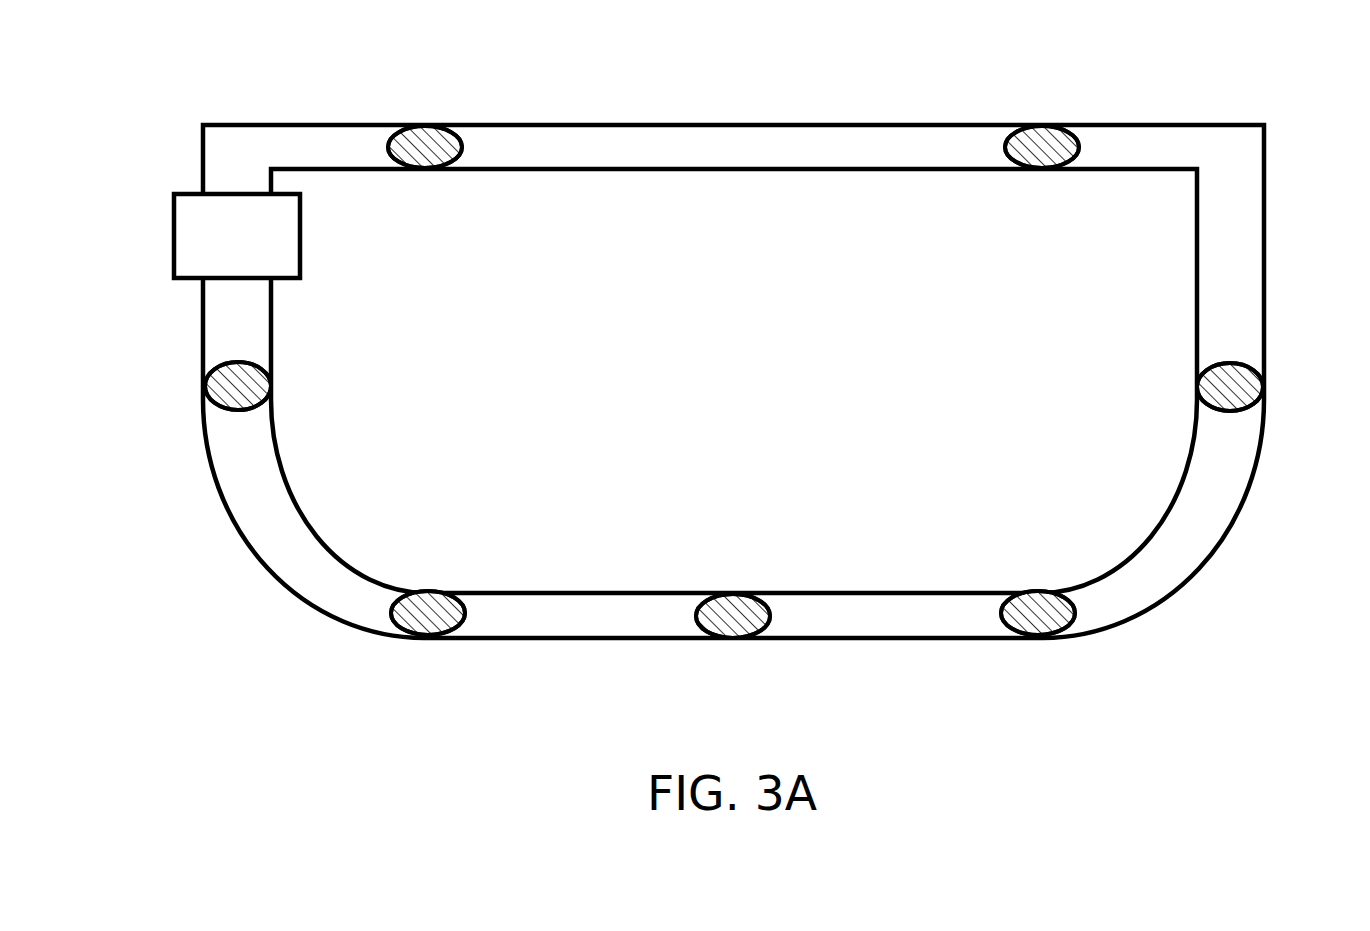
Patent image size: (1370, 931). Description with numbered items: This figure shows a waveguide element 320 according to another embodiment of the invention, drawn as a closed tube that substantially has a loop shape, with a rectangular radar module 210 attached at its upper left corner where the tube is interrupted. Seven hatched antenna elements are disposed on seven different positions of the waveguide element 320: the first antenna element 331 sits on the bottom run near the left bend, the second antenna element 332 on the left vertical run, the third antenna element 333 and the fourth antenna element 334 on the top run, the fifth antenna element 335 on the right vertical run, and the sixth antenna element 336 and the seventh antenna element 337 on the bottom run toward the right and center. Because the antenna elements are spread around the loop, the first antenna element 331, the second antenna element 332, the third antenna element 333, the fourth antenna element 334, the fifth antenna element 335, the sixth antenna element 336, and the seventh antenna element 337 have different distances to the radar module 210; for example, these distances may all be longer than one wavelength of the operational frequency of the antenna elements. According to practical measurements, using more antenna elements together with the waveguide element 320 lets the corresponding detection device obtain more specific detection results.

The radar module 210 is at (188, 238).
The waveguide element 320 is at (1248, 260).
The first antenna element 331 is at (428, 632).
The second antenna element 332 is at (208, 388).
The third antenna element 333 is at (424, 130).
The fourth antenna element 334 is at (1040, 130).
The fifth antenna element 335 is at (1247, 383).
The sixth antenna element 336 is at (1038, 632).
The seventh antenna element 337 is at (733, 634).